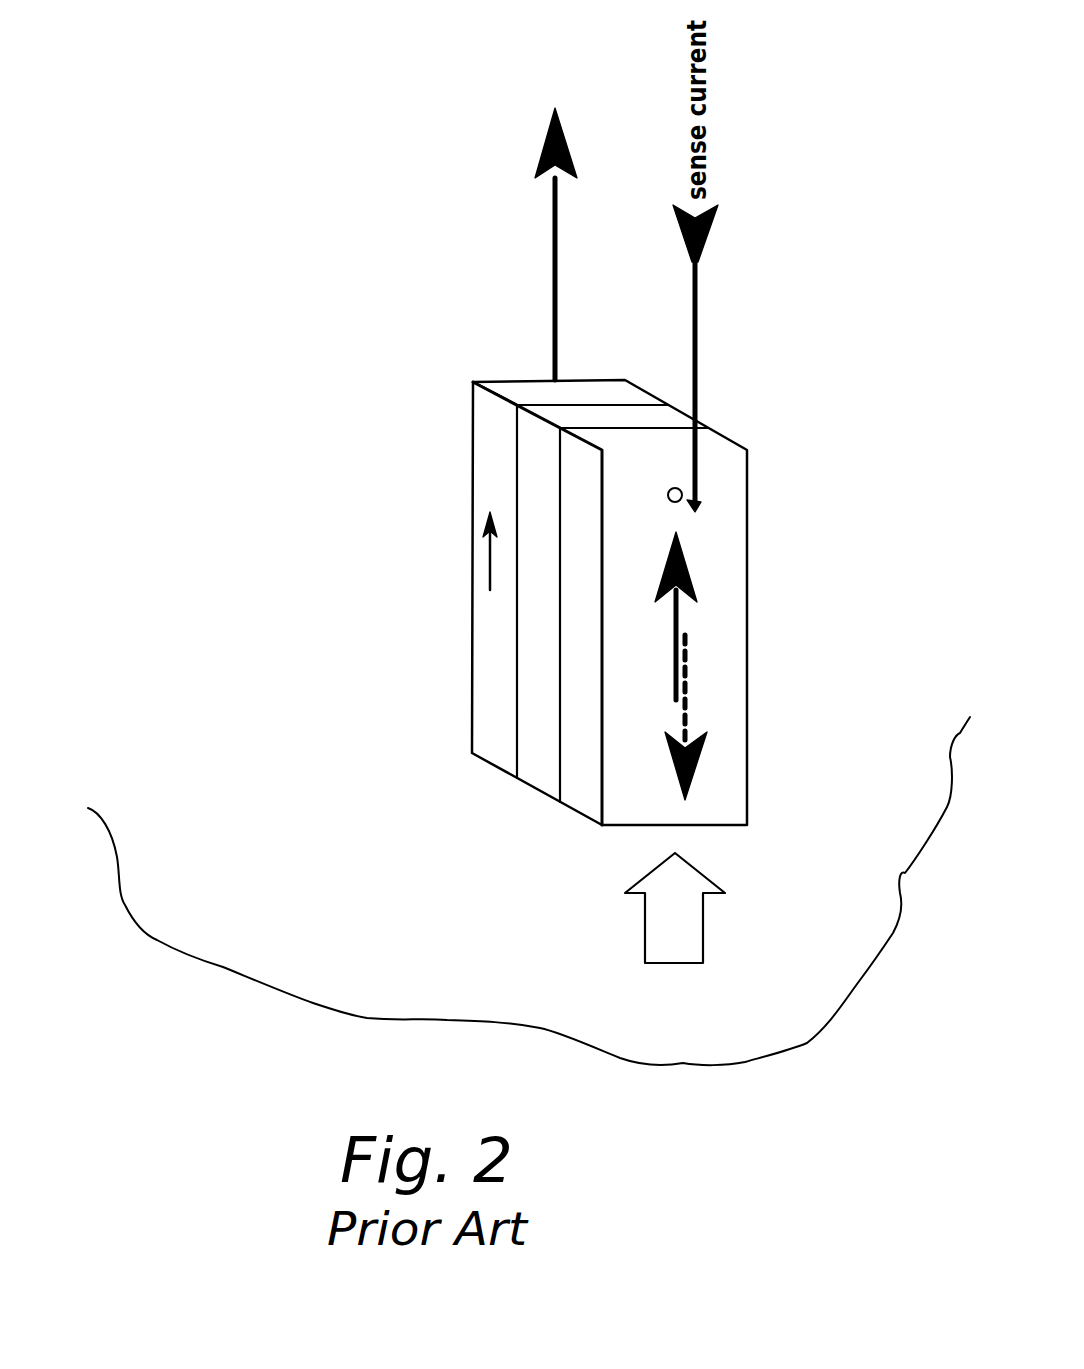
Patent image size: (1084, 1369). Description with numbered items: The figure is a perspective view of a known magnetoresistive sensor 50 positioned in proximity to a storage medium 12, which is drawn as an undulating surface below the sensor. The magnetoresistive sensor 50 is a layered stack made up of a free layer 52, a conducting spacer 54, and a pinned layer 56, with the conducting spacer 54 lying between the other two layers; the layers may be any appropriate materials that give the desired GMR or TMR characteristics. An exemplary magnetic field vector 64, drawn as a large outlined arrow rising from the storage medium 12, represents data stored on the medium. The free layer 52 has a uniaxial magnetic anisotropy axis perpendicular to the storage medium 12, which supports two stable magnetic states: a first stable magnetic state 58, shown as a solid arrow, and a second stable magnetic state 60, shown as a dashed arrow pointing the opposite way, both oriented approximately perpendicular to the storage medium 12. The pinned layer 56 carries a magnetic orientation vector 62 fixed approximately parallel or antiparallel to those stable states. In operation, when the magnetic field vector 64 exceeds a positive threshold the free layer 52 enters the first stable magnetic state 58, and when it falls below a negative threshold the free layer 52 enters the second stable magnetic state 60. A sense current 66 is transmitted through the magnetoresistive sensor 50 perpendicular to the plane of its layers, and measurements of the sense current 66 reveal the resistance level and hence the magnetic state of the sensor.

The storage medium 12 is at (320, 1003).
The magnetoresistive sensor 50 is at (828, 286).
The free layer 52 is at (578, 798).
The conducting spacer 54 is at (532, 458).
The pinned layer 56 is at (493, 423).
The first stable magnetic state 58 is at (700, 572).
The second stable magnetic state 60 is at (702, 768).
The magnetic orientation vector 62 is at (488, 557).
The magnetic field vector 64 is at (708, 918).
The sense current 66 is at (721, 220).